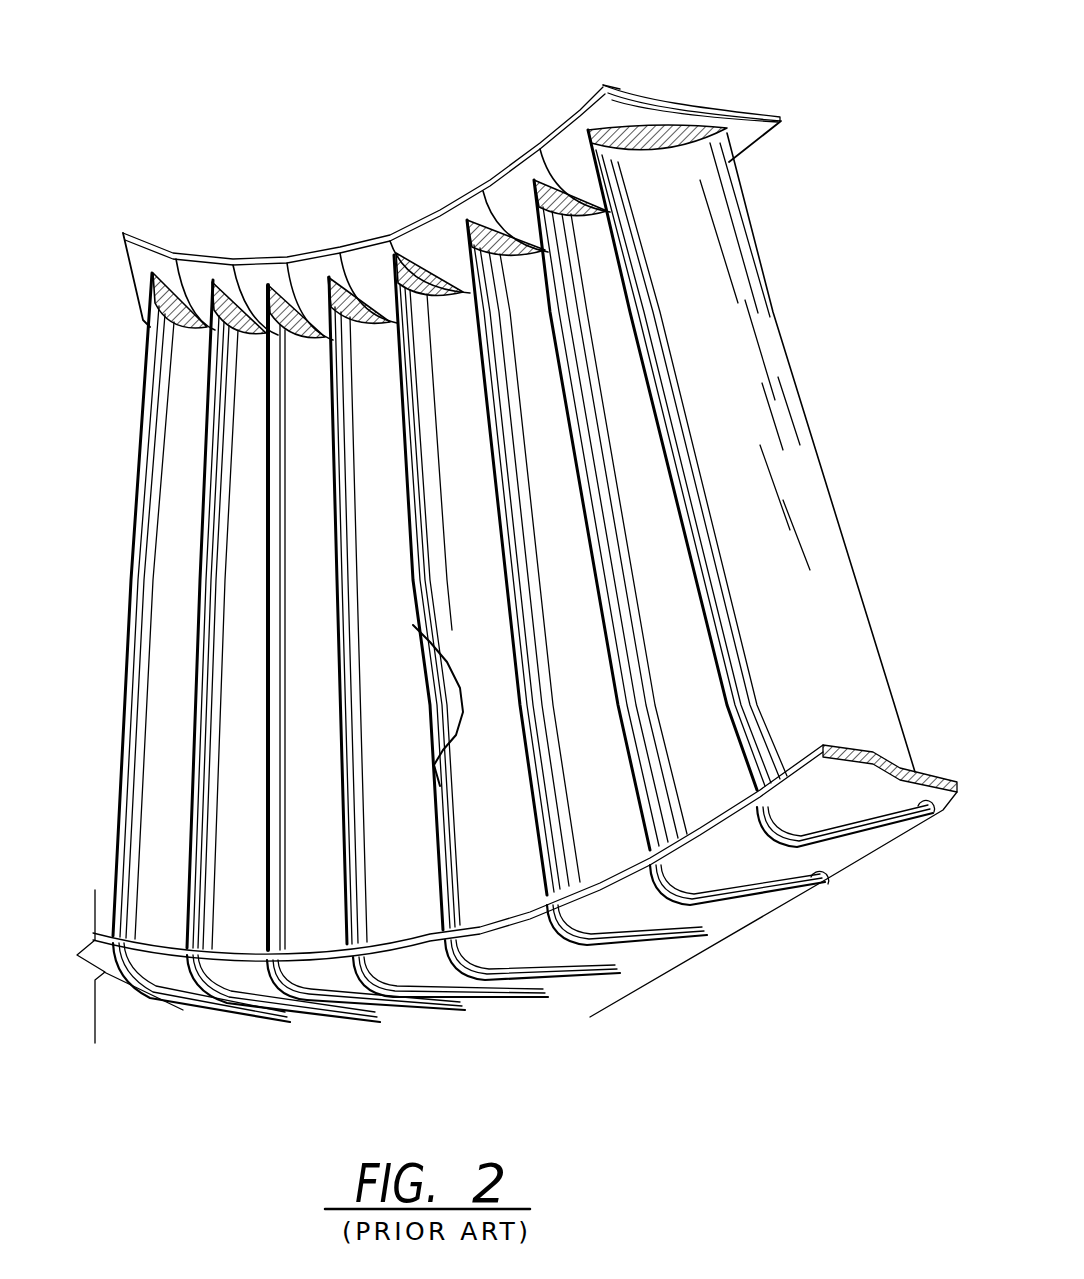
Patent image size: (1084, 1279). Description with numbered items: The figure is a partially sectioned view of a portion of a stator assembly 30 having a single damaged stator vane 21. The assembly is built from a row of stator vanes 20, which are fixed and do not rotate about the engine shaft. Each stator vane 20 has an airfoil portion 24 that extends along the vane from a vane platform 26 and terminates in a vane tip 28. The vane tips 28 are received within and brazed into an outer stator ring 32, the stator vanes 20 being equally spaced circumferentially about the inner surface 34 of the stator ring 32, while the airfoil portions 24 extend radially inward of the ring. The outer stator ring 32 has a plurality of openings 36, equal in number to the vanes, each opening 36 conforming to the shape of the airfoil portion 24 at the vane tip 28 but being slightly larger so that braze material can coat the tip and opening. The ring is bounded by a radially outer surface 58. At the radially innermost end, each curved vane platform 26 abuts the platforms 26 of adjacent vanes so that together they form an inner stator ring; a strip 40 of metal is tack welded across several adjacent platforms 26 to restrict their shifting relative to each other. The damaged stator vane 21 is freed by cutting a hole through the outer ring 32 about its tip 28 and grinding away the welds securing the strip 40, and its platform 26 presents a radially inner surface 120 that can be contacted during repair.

The stator vane 20 is at (278, 477).
The damaged stator vane 21 is at (452, 350).
The airfoil portion 24 is at (729, 162).
The vane platform 26 is at (498, 177).
The vane tip 28 is at (525, 882).
The stator assembly 30 is at (232, 189).
The outer stator ring 32 is at (395, 1005).
The inner surface 34 is at (922, 766).
The opening 36 is at (937, 822).
The strip 40 is at (680, 106).
The radially outer surface 58 is at (93, 932).
The radially inner surface 120 is at (767, 118).